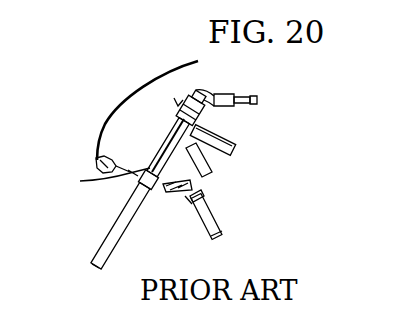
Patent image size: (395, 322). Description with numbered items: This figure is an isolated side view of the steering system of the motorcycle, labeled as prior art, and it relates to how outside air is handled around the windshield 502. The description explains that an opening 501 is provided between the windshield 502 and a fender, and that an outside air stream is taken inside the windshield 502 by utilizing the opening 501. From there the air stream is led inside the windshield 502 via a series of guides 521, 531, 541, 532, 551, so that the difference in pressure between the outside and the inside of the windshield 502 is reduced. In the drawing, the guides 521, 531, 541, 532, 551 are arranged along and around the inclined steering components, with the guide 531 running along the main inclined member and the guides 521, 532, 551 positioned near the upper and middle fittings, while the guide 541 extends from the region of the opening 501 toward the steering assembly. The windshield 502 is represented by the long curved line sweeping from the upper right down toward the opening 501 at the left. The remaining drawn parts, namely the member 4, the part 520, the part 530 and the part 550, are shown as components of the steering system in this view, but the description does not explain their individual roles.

The tube 4 is at (104, 231).
The opening 501 is at (99, 162).
The windshield 502 is at (156, 88).
The fitting tube 520 is at (230, 93).
The guide 521 is at (198, 92).
The side tube 530 is at (208, 172).
The guide 531 is at (153, 163).
The guide 532 is at (198, 180).
The guide 541 is at (82, 181).
The cylinder 550 is at (218, 222).
The guide 551 is at (183, 204).